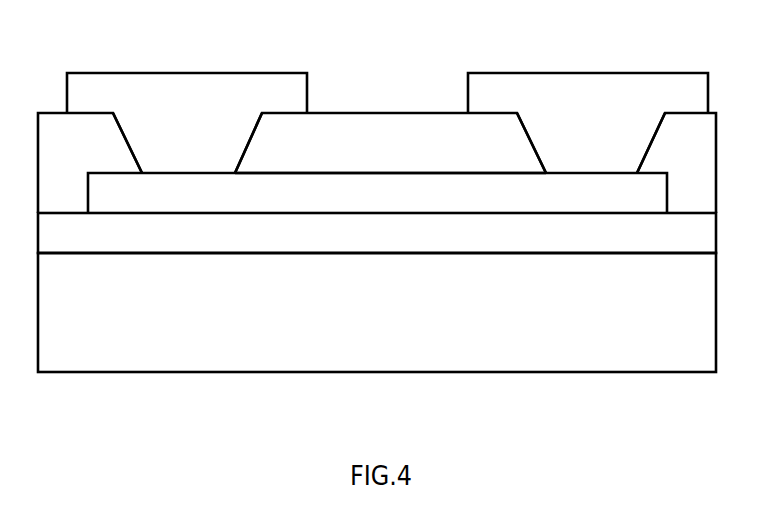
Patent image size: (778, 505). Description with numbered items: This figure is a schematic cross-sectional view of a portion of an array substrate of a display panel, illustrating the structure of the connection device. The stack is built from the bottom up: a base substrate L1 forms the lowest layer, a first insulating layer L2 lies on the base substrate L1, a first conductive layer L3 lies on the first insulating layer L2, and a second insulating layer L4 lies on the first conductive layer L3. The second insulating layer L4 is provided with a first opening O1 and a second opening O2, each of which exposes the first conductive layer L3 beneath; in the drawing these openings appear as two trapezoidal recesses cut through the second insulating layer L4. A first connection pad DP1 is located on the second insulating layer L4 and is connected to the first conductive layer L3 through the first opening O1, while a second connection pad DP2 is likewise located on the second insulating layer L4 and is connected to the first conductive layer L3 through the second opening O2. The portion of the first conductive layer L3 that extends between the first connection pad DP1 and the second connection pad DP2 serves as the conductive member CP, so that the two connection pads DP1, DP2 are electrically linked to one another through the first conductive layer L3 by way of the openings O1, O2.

The base substrate L1 is at (377, 312).
The first insulating layer L2 is at (377, 233).
The first conductive layer L3 is at (377, 193).
The second insulating layer L4 is at (377, 163).
The first opening O1 is at (187, 143).
The second opening O2 is at (591, 143).
The first connection pad DP1 is at (185, 72).
The second connection pad DP2 is at (580, 72).
The conductive member CP is at (421, 192).